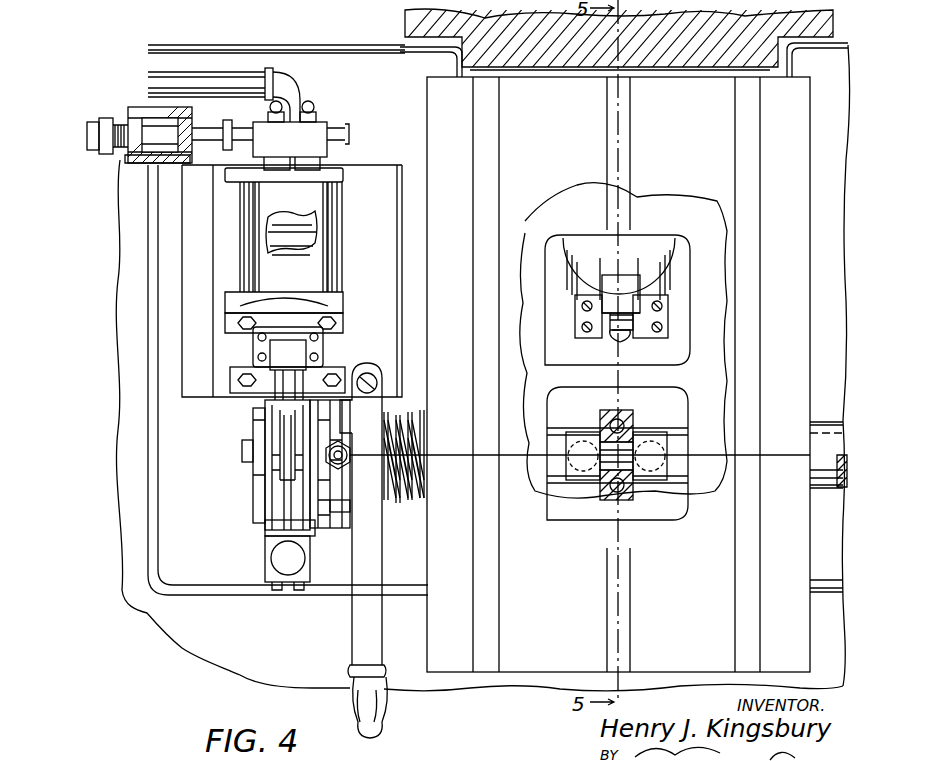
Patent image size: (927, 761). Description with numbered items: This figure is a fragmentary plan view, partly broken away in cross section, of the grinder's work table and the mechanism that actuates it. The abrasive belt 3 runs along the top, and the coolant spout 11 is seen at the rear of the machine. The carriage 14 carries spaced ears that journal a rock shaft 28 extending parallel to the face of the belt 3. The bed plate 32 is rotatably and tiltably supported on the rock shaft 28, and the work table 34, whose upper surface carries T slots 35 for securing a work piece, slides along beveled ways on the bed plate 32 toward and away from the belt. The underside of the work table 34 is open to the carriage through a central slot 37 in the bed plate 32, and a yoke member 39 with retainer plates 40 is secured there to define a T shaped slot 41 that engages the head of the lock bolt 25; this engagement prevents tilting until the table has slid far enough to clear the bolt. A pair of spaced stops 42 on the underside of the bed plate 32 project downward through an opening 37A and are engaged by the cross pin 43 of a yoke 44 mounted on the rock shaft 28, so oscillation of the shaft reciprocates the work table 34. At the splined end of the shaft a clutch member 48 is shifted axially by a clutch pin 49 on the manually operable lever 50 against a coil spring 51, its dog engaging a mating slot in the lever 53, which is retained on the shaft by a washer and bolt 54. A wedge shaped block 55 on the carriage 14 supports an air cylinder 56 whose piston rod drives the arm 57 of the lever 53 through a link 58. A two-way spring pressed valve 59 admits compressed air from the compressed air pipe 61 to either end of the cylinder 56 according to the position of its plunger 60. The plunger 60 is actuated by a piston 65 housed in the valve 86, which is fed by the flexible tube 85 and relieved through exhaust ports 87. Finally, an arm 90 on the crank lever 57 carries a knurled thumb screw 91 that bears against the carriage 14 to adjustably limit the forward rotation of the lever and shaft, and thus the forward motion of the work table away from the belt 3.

The abrasive belt 3 is at (718, 70).
The spout 11 is at (346, 46).
The carriage 14 is at (208, 586).
The lock bolt 25 is at (625, 285).
The rock shaft 28 is at (688, 482).
The bed plate 32 is at (660, 375).
The work table 34 is at (797, 175).
The T slots 35 is at (490, 172).
The slot 37 is at (663, 300).
The opening 37A is at (688, 410).
The yoke member 39 is at (660, 290).
The retainer plates 40 is at (640, 318).
The T shaped slot 41 is at (640, 330).
The stops 42 is at (632, 425).
The cross pin 43 is at (608, 448).
The yoke 44 is at (570, 480).
The clutch member 48 is at (330, 510).
The clutch pin 49 is at (343, 460).
The manually operable lever 50 is at (376, 618).
The coil spring 51 is at (410, 455).
The lever 53 is at (274, 510).
The washer and bolt 54 is at (243, 458).
The wedge shaped block 55 is at (228, 398).
The air cylinder 56 is at (336, 268).
The arm 57 is at (268, 527).
The link 58 is at (288, 522).
The two-way spring pressed valve 59 is at (262, 130).
The plunger 60 is at (214, 130).
The compressed air pipe 61 is at (293, 94).
The piston 65 is at (190, 166).
The flexible tube 85 is at (97, 131).
The valve 86 is at (146, 78).
The exhaust ports 87 is at (162, 112).
The arm 90 is at (278, 582).
The knurled thumb screw 91 is at (292, 568).